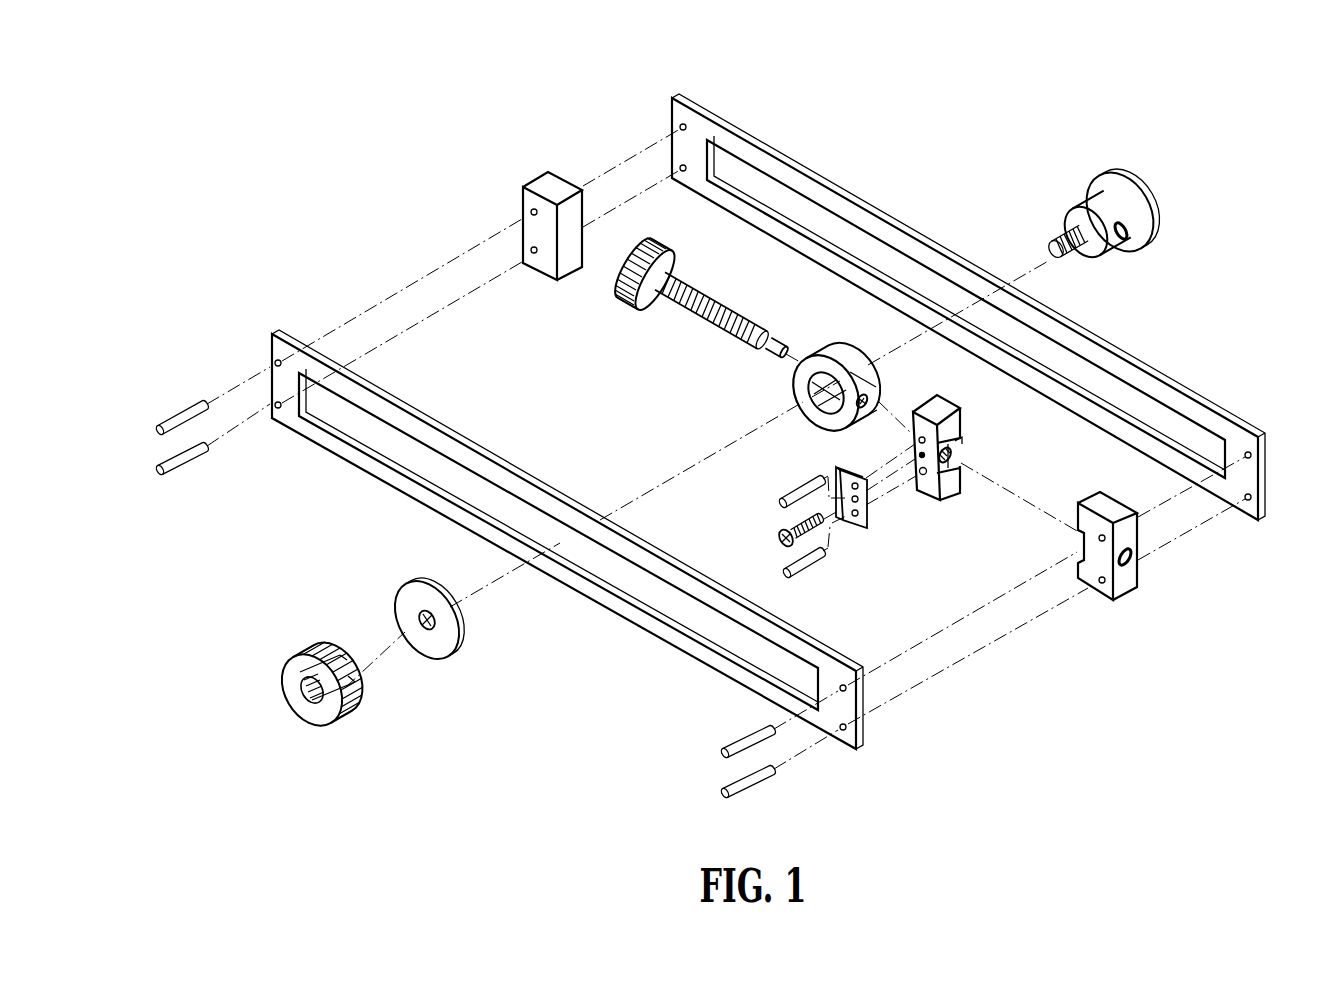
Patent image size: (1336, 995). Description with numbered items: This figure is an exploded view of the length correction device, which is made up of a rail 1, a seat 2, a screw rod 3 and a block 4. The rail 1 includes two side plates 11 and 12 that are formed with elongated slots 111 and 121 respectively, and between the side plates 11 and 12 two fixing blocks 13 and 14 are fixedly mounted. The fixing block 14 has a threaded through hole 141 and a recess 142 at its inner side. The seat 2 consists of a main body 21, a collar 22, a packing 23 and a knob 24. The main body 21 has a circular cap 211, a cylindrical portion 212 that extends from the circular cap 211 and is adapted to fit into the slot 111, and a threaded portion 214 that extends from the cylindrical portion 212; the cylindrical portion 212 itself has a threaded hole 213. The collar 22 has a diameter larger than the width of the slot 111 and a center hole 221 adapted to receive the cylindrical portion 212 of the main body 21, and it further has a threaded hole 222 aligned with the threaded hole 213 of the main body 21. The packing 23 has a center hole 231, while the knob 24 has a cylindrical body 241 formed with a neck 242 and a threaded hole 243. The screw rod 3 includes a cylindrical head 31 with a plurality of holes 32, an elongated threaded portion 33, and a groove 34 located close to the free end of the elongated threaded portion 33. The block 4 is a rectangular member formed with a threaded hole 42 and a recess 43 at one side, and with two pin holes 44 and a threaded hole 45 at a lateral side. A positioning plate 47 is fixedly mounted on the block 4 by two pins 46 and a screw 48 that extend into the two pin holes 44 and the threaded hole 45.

The rail 1 is at (355, 215).
The side plate 11 is at (893, 235).
The elongated slot 111 is at (787, 198).
The side plate 12 is at (710, 658).
The elongated slot 121 is at (693, 620).
The fixing block 13 is at (548, 183).
The fixing block 14 is at (1128, 583).
The threaded through hole 141 is at (1133, 558).
The recess 142 is at (1078, 543).
The seat 2 is at (1245, 115).
The main body 21 is at (1195, 222).
The circular cap 211 is at (1140, 185).
The cylindrical portion 212 is at (1103, 213).
The threaded hole 213 is at (1132, 240).
The threaded portion 214 is at (1078, 252).
The collar 22 is at (838, 337).
The center hole 221 is at (842, 405).
The threaded hole 222 is at (864, 404).
The packing 23 is at (457, 635).
The center hole 231 is at (417, 618).
The knob 24 is at (278, 648).
The cylindrical body 241 is at (325, 717).
The neck 242 is at (357, 685).
The threaded hole 243 is at (303, 697).
The screw rod 3 is at (633, 333).
The cylindrical head 31 is at (620, 248).
The holes 32 is at (613, 281).
The elongated threaded portion 33 is at (718, 342).
The groove 34 is at (758, 350).
The block 4 is at (952, 508).
The threaded hole 42 is at (955, 446).
The recess 43 is at (963, 445).
The pin holes 44 is at (920, 440).
The threaded hole 45 is at (923, 477).
The pins 46 is at (782, 495).
The positioning plate 47 is at (858, 530).
The screw 48 is at (776, 537).